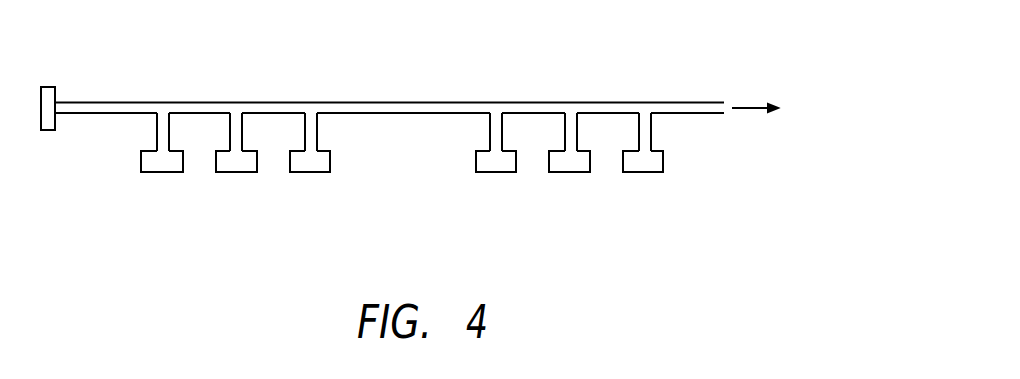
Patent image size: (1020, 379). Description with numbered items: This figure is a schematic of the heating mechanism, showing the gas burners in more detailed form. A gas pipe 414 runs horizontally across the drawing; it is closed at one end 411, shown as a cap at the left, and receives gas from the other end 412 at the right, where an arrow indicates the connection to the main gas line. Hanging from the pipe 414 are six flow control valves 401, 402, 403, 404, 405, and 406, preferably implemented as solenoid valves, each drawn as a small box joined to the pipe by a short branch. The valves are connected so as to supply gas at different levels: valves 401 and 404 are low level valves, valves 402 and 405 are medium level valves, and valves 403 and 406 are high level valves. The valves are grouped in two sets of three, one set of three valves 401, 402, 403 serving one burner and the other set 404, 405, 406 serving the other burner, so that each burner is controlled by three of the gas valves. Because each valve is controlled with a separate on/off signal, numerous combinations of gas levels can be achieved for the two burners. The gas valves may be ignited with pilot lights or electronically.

The flow control valve 401 is at (167, 173).
The flow control valve 402 is at (243, 173).
The flow control valve 403 is at (317, 173).
The flow control valve 404 is at (502, 173).
The flow control valve 405 is at (577, 173).
The flow control valve 406 is at (651, 173).
The closed end 411 is at (55, 88).
The gas receiving end 412 is at (790, 99).
The gas pipe 414 is at (266, 101).